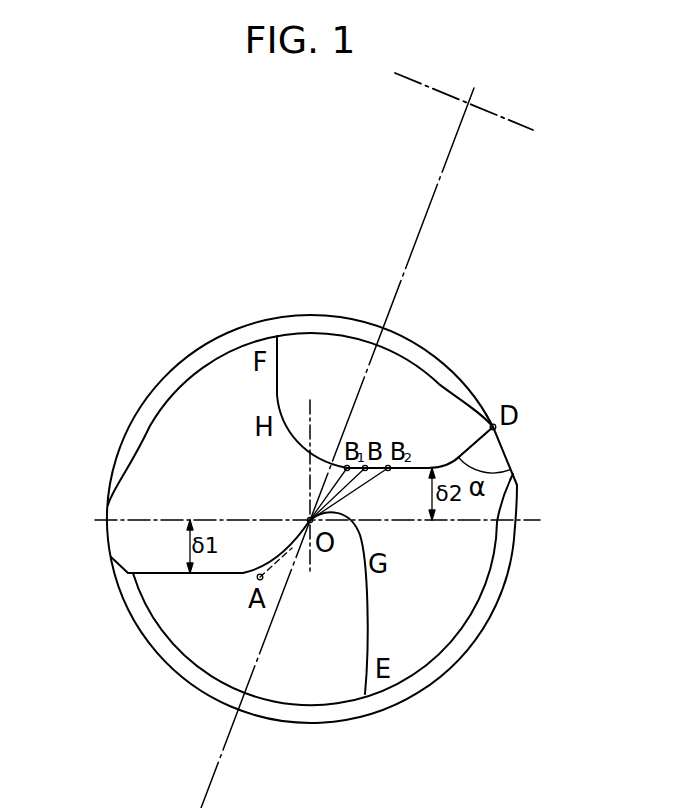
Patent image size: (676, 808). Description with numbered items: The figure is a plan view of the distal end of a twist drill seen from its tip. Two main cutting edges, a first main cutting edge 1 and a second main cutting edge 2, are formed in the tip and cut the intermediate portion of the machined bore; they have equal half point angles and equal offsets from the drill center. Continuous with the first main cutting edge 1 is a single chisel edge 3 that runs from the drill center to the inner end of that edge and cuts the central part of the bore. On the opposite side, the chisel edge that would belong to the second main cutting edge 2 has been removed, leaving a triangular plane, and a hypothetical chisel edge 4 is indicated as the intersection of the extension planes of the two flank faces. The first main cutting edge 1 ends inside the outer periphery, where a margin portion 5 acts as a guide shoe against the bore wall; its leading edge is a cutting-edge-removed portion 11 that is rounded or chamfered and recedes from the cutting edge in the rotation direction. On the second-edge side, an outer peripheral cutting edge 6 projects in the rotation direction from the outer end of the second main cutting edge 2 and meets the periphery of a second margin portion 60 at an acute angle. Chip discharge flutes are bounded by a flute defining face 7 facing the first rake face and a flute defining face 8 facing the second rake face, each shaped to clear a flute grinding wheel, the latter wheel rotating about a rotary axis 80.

The first main cutting edge 1 is at (199, 578).
The second main cutting edge 2 is at (433, 465).
The chisel edge 3 is at (295, 546).
The hypothetical chisel edge 4 is at (352, 488).
The margin portion 5 is at (101, 524).
The outer peripheral cutting edge 6 is at (482, 408).
The flute defining face 7 is at (362, 598).
The flute defining face 8 is at (280, 392).
The cutting-edge-removed portion 11 is at (116, 578).
The margin portion 60 is at (507, 450).
The rotary axis 80 is at (483, 110).